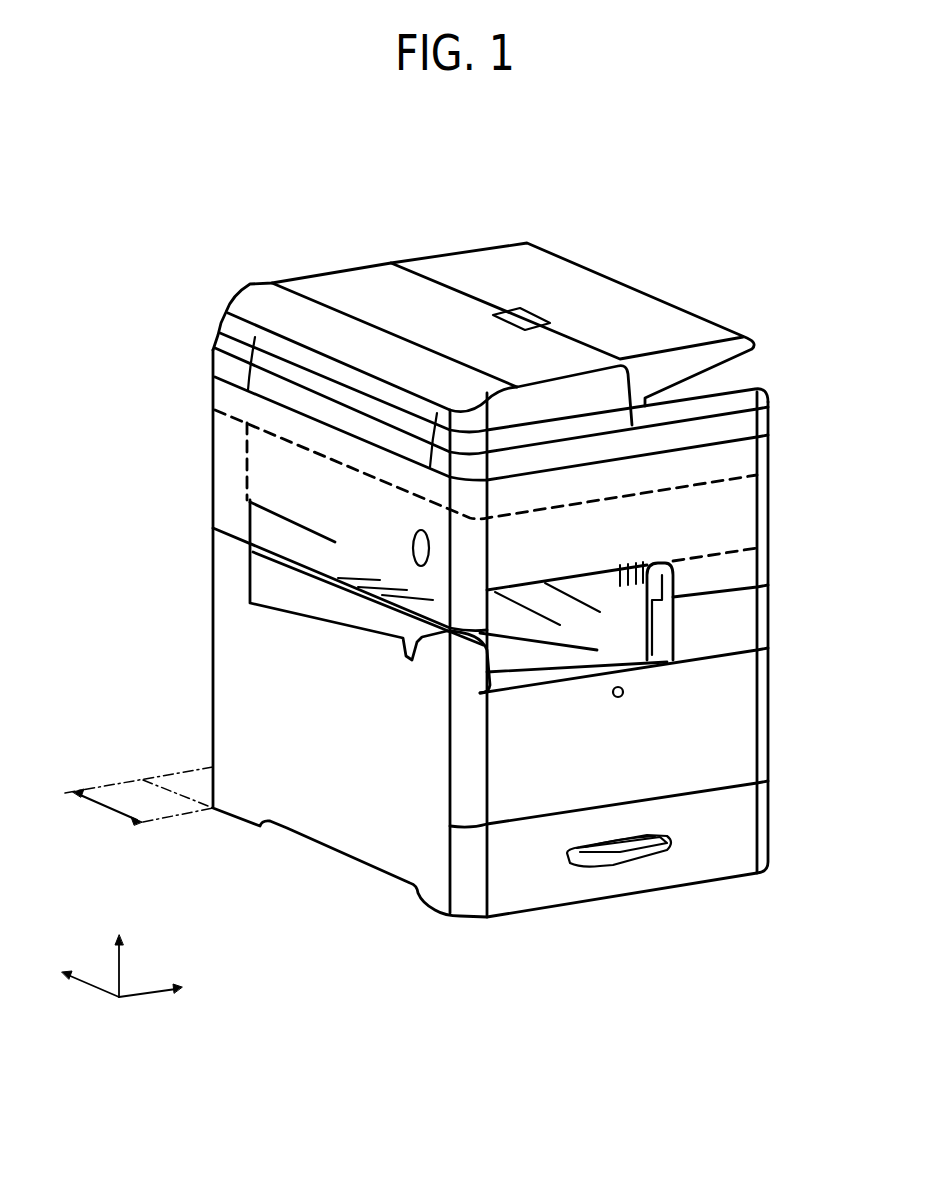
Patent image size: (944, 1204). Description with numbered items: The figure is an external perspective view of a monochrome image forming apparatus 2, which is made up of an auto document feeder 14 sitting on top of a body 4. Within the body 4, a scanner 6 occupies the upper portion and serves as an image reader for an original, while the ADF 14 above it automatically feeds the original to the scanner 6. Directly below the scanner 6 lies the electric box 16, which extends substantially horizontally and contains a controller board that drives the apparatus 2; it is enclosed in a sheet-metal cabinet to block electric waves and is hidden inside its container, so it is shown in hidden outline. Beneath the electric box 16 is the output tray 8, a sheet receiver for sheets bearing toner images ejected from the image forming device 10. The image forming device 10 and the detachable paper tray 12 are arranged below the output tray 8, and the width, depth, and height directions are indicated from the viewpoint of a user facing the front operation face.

The image forming apparatus 2 is at (725, 221).
The body 4 is at (842, 433).
The scanner 6 is at (748, 457).
The output tray 8 is at (457, 622).
The image forming device 10 is at (748, 709).
The paper tray 12 is at (748, 829).
The auto document feeder (ADF) 14 is at (349, 269).
The electric box 16 is at (748, 511).